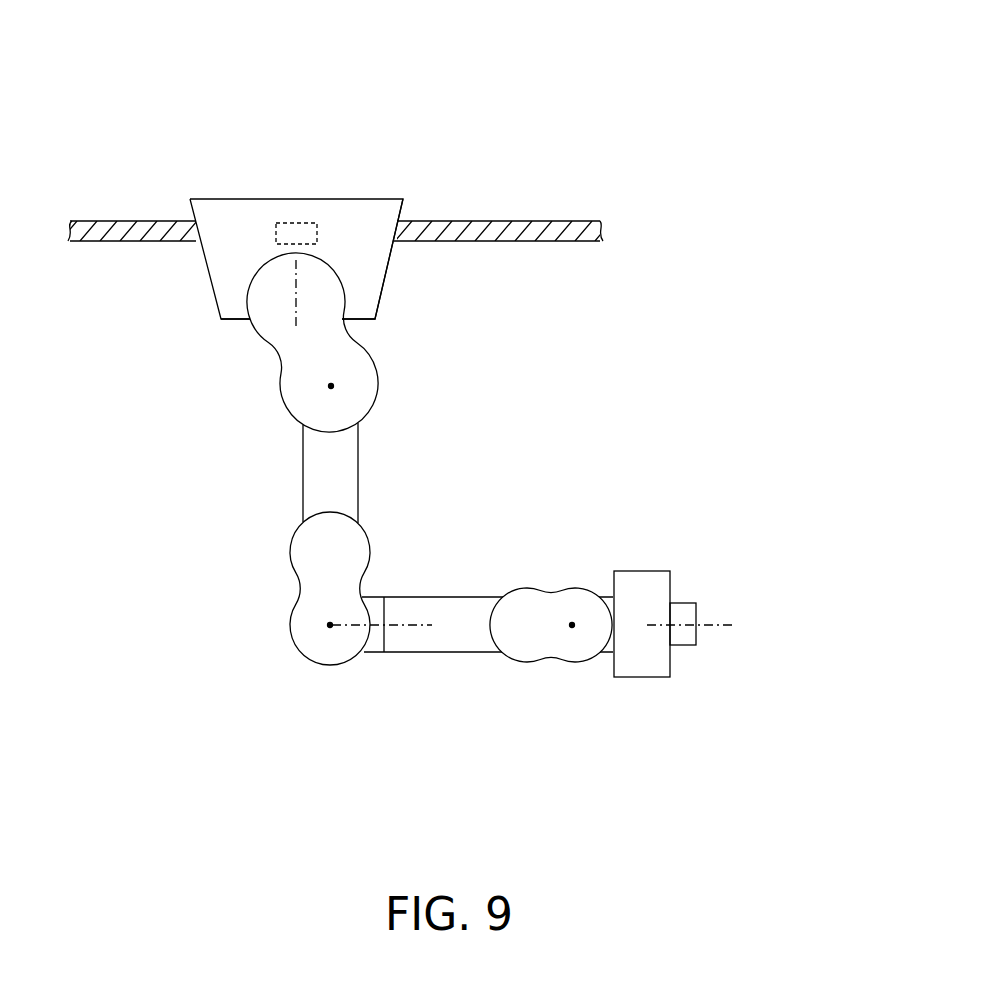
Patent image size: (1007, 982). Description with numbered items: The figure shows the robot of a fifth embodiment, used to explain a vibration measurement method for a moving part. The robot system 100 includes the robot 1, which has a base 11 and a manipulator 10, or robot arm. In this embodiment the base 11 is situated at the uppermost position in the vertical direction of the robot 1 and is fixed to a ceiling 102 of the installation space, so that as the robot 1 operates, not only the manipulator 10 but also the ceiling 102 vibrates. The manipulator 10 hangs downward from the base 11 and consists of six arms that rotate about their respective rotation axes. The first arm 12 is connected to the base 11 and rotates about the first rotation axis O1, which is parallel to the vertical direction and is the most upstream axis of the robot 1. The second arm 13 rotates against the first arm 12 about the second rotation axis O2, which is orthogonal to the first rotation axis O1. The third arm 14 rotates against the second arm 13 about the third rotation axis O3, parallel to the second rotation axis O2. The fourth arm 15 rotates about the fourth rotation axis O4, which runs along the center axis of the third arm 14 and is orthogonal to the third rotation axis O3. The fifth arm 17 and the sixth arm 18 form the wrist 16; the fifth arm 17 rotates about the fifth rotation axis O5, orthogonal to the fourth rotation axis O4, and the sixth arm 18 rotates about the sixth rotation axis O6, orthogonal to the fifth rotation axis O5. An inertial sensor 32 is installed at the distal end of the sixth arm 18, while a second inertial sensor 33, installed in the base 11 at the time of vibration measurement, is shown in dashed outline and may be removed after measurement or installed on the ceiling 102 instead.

The robot system 100 is at (758, 76).
The robot 1 is at (745, 143).
The manipulator 10 is at (734, 210).
The base 11 is at (231, 199).
The inertial sensor 33 is at (300, 222).
The ceiling 102 is at (541, 220).
The first arm 12 is at (280, 366).
The second arm 13 is at (293, 572).
The third arm 14 is at (374, 655).
The fourth arm 15 is at (527, 588).
The wrist 16 is at (630, 685).
The fifth arm 17 is at (603, 655).
The sixth arm 18 is at (645, 679).
The inertial sensor 32 is at (686, 603).
The first rotation axis O1 is at (294, 322).
The second rotation axis O2 is at (330, 387).
The third rotation axis O3 is at (328, 625).
The fourth rotation axis O4 is at (392, 622).
The fifth rotation axis O5 is at (572, 624).
The sixth rotation axis O6 is at (718, 625).